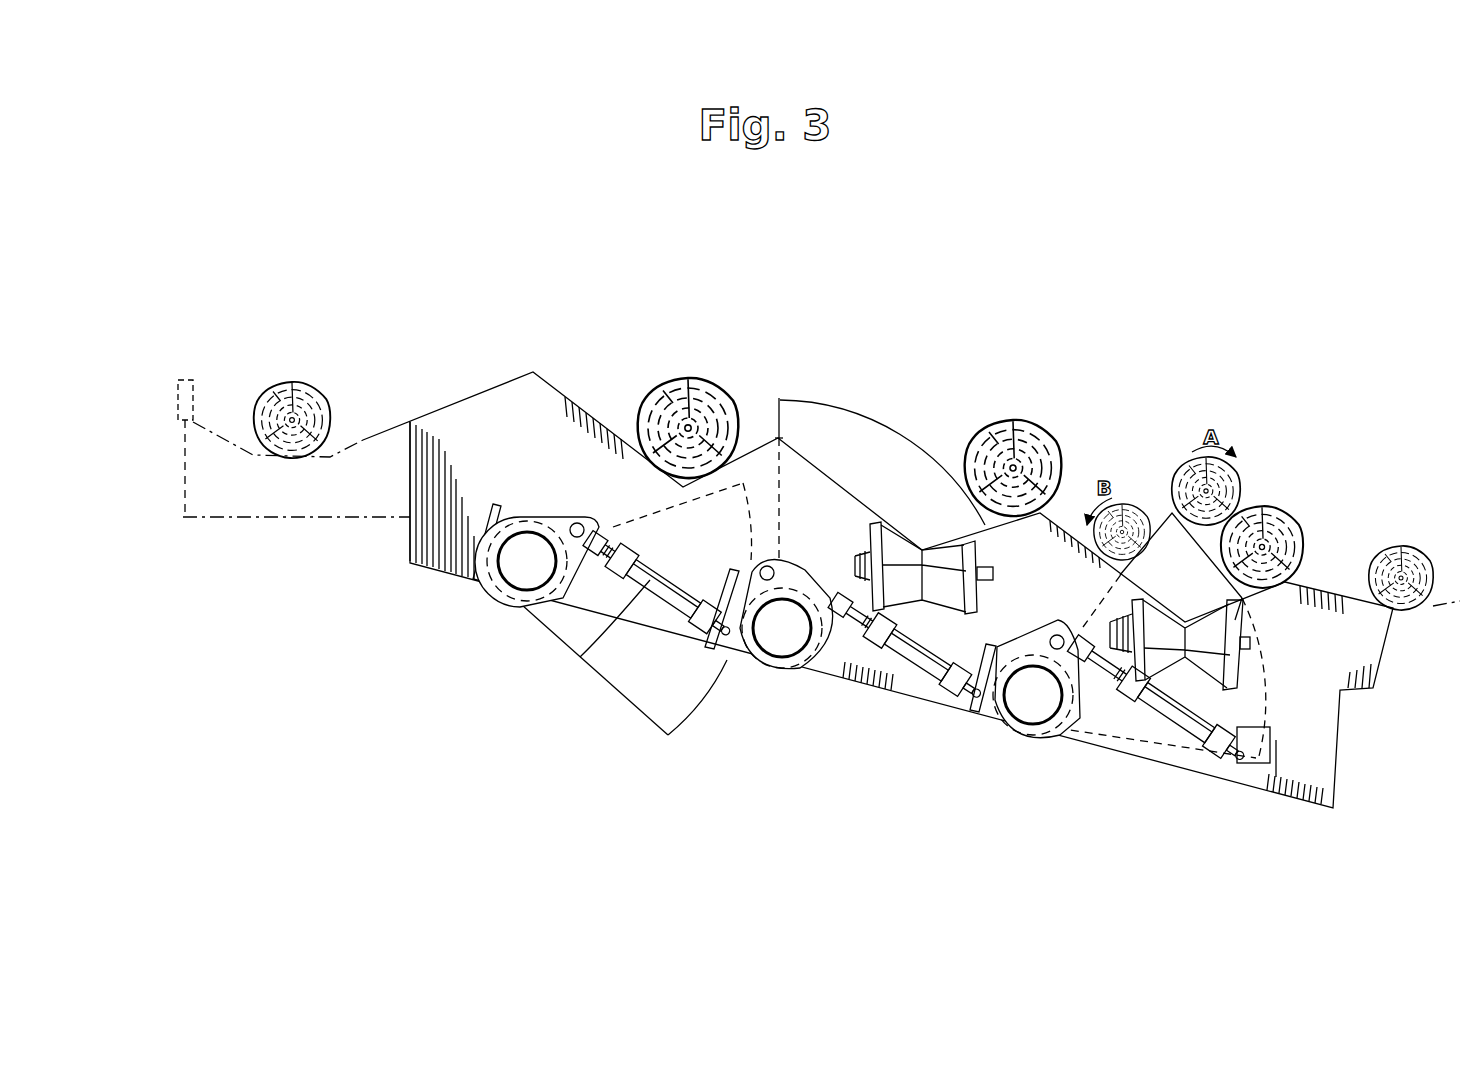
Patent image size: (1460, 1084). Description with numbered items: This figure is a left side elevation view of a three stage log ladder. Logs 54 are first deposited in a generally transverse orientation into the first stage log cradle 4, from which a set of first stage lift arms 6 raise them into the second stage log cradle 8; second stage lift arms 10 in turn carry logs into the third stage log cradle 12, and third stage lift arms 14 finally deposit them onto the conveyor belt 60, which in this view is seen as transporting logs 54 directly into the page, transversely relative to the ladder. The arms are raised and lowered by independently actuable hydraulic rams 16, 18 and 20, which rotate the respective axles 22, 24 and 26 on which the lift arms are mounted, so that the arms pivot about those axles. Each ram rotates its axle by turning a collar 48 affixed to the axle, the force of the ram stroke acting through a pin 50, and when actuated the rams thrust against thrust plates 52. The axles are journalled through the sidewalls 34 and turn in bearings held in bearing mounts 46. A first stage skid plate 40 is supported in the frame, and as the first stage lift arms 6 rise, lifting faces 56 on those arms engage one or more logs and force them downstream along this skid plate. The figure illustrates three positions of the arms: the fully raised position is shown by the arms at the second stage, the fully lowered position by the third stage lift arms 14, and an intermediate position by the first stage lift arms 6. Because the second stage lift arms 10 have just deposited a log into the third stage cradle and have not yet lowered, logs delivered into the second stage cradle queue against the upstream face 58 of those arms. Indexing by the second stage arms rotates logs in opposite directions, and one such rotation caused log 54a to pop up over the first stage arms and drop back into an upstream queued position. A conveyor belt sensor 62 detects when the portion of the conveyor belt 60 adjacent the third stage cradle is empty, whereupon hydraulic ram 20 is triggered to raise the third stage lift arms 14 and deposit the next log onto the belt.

The first stage log cradle 4 is at (1181, 460).
The first stage lift arms 6 is at (1193, 563).
The second stage log cradle 8 is at (928, 432).
The second stage lift arms 10 is at (857, 442).
The third stage log cradle 12 is at (688, 348).
The third stage lift arms 14 is at (620, 667).
The hydraulic ram 16 is at (1180, 708).
The hydraulic ram 18 is at (913, 658).
The hydraulic ram 20 is at (580, 657).
The axle 22 is at (1033, 705).
The axle 24 is at (783, 637).
The axle 26 is at (523, 575).
The sidewalls 34 is at (1323, 772).
The first stage skid plate 40 is at (1070, 527).
The bearing mounts 46 is at (504, 507).
The collars 48 is at (562, 517).
The pins 50 is at (574, 521).
The thrust plates 52 is at (717, 647).
The logs 54 is at (286, 388).
The log 54a is at (1240, 469).
The lifting faces 56 is at (778, 436).
The upstream face 58 is at (812, 402).
The conveyor belt 60 is at (355, 442).
The conveyor belt sensor 62 is at (186, 381).